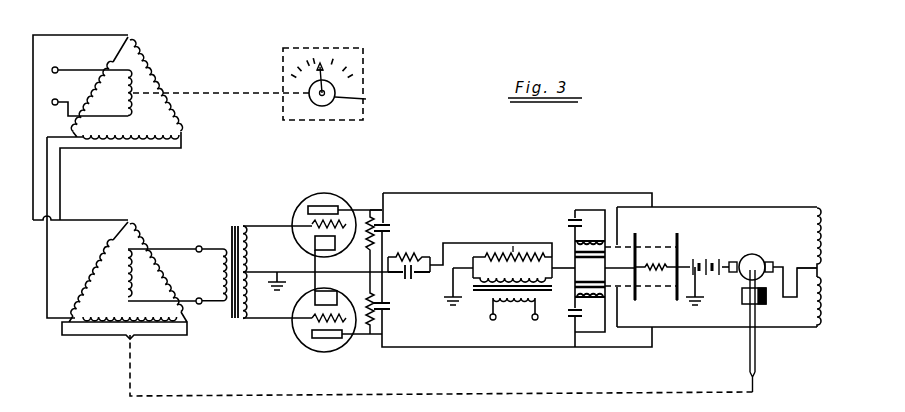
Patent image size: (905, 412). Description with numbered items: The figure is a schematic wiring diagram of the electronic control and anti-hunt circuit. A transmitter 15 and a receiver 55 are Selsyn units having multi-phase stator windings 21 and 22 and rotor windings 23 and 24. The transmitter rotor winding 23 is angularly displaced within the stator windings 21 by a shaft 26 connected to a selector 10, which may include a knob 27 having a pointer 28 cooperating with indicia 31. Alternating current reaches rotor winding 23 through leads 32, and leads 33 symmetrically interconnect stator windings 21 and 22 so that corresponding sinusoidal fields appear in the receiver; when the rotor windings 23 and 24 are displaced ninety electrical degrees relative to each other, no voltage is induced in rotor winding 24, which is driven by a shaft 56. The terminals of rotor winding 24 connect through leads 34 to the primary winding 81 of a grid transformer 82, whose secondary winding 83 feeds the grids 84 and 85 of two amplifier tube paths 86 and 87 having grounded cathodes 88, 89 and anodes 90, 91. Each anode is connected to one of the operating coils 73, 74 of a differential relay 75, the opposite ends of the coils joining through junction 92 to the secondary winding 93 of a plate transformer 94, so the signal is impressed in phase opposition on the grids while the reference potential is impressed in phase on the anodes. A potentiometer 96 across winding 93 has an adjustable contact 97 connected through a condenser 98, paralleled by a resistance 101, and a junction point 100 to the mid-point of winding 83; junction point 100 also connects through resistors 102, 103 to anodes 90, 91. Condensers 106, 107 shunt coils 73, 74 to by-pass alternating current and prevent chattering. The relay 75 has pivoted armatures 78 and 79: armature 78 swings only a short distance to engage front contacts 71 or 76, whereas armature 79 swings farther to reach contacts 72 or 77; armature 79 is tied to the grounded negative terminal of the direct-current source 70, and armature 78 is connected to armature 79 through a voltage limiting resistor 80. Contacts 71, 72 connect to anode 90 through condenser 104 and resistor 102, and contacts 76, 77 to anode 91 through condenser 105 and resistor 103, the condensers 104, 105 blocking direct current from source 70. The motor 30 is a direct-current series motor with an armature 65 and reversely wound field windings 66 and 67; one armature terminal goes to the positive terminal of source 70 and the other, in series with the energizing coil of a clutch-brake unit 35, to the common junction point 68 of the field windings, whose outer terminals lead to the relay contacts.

The selector 10 is at (337, 145).
The transmitter 15 is at (131, 175).
The stator windings 21 is at (112, 64).
The stator windings 22 is at (110, 242).
The rotor winding 23 is at (131, 99).
The rotor winding 24 is at (126, 289).
The shaft 26 is at (248, 91).
The knob 27 is at (361, 103).
The pointer 28 is at (331, 62).
The motor 30 is at (760, 243).
The indicia 31 is at (321, 62).
The leads 32 is at (66, 63).
The leads 33 is at (60, 184).
The leads 34 is at (195, 245).
The clutch-brake unit 35 is at (735, 307).
The receiver 55 is at (98, 360).
The shaft 56 is at (343, 393).
The armature 65 is at (763, 254).
The field winding 66 is at (809, 221).
The field winding 67 is at (807, 315).
The common junction point 68 is at (808, 264).
The source of direct current 70 is at (713, 257).
The front contact 71 is at (622, 241).
The front contact 72 is at (660, 241).
The operating coil 73 is at (602, 240).
The operating coil 74 is at (581, 295).
The differential relay 75 is at (590, 271).
The front contact 76 is at (622, 295).
The front contact 77 is at (660, 295).
The pivoted armature 78 is at (633, 268).
The pivoted armature 79 is at (692, 260).
The voltage limiting resistor 80 is at (668, 264).
The primary winding 81 is at (216, 272).
The grid transformer 82 is at (248, 345).
The secondary winding 83 is at (254, 259).
The grid 84 is at (343, 208).
The grid 85 is at (298, 341).
The electronic amplifier tube path 86 is at (345, 193).
The electronic amplifier tube path 87 is at (341, 346).
The cathode 88 is at (336, 250).
The cathode 89 is at (338, 292).
The anode 90 is at (311, 205).
The anode 91 is at (316, 340).
The junction 92 is at (566, 268).
The secondary winding 93 is at (549, 285).
The plate transformer 94 is at (481, 315).
The potentiometer 96 is at (528, 247).
The adjustable contact 97 is at (513, 254).
The condenser 98 is at (416, 274).
The junction point 100 is at (403, 274).
The resistance 101 is at (432, 246).
The resistor 102 is at (387, 243).
The resistor 103 is at (388, 318).
The condenser 104 is at (389, 226).
The condenser 105 is at (387, 305).
The condenser 106 is at (573, 210).
The condenser 107 is at (572, 334).